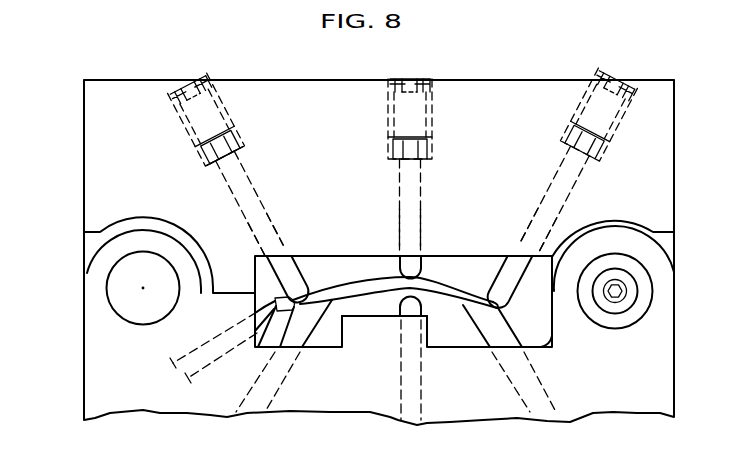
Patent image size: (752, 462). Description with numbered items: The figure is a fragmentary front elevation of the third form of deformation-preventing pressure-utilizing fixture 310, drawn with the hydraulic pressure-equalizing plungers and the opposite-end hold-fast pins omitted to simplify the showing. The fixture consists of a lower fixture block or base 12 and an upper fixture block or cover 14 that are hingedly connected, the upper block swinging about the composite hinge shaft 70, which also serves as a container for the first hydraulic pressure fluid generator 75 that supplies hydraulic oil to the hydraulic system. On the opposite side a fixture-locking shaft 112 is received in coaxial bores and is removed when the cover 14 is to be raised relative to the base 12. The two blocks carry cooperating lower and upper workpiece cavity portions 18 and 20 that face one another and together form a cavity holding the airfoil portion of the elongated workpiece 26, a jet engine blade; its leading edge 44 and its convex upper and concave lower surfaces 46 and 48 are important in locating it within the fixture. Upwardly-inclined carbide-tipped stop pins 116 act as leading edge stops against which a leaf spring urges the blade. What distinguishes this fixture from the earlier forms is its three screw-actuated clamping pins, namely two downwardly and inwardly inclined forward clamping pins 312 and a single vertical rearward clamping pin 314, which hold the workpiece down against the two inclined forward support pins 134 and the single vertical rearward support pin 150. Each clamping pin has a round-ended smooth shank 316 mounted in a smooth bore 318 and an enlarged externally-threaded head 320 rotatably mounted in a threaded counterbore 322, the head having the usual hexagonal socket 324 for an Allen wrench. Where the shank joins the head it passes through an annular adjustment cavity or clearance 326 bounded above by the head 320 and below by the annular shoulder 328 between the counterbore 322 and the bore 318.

The lower fixture block or base 12 is at (84, 372).
The upper fixture block or cover 14 is at (84, 190).
The lower workpiece cavity portion 18 is at (554, 344).
The upper workpiece cavity portion 20 is at (444, 255).
The workpiece 26 is at (447, 283).
The leading edge 44 is at (293, 300).
The convex upper surface 46 is at (352, 284).
The concave lower surface 48 is at (367, 298).
The composite hinge shaft 70 is at (650, 290).
The first hydraulic pressure fluid generator 75 is at (620, 300).
The fixture-locking shaft 112 is at (120, 290).
The stop pins 116 is at (203, 347).
The forward support pins 134 is at (271, 377).
The rearward support pin 150 is at (417, 382).
The deformation-preventing pressure-utilizing fixture 310 is at (84, 88).
The forward clamping pins 312 is at (232, 131).
The rearward clamping pin 314 is at (437, 145).
The smooth shank 316 is at (244, 196).
The smooth bore 318 is at (270, 226).
The externally-threaded head 320 is at (203, 136).
The threaded counterbore 322 is at (168, 100).
The hexagonal socket 324 is at (179, 75).
The annular adjustment cavity or clearance 326 is at (212, 166).
The annular shoulder 328 is at (240, 164).